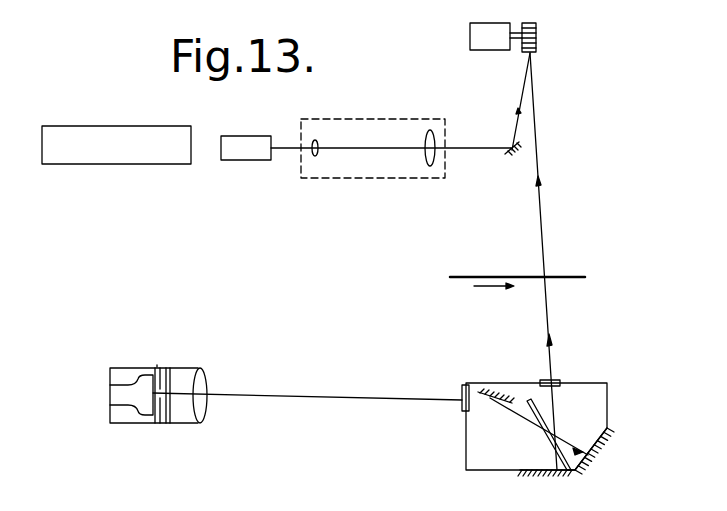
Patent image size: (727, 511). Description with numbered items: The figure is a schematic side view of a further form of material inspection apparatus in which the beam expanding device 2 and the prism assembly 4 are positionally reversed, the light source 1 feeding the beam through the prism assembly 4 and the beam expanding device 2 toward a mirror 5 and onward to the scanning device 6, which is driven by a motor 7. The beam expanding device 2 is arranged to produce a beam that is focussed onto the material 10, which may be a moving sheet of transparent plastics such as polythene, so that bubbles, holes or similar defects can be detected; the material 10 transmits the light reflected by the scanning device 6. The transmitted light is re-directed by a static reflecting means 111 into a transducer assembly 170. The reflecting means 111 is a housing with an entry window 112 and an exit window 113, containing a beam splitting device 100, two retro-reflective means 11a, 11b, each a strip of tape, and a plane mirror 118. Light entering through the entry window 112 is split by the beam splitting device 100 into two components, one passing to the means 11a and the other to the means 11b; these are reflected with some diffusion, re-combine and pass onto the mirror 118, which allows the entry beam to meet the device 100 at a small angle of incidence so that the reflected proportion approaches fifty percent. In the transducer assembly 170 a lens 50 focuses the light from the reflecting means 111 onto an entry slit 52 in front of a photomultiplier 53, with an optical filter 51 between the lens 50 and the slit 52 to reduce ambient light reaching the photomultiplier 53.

The laser light source 1 is at (68, 137).
The beam expanding device 2 is at (355, 137).
The prism assembly 4 is at (237, 143).
The mirror 5 is at (510, 155).
The scanning device 6 is at (537, 45).
The motor 7 is at (468, 34).
The material 10 is at (477, 276).
The lens 50 is at (203, 380).
The optical filter 51 is at (172, 368).
The entry slit 52 is at (160, 423).
The photomultiplier 53 is at (120, 387).
The transducer assembly 170 is at (157, 367).
The beam splitting device 100 is at (533, 417).
The static reflecting means 111 is at (460, 418).
The entry window 112 is at (562, 377).
The exit window 113 is at (461, 392).
The plane mirror 118 is at (480, 390).
The retro-reflective means 11a is at (607, 437).
The retro-reflective means 11b is at (520, 474).